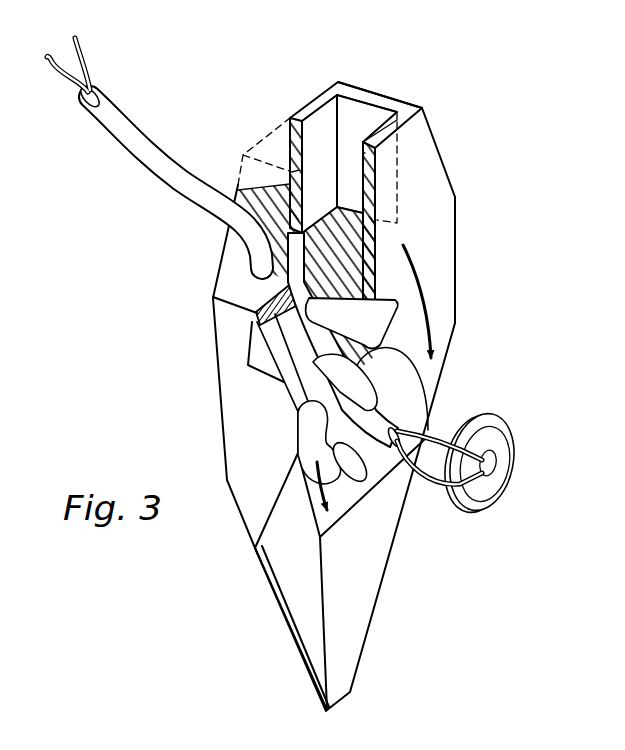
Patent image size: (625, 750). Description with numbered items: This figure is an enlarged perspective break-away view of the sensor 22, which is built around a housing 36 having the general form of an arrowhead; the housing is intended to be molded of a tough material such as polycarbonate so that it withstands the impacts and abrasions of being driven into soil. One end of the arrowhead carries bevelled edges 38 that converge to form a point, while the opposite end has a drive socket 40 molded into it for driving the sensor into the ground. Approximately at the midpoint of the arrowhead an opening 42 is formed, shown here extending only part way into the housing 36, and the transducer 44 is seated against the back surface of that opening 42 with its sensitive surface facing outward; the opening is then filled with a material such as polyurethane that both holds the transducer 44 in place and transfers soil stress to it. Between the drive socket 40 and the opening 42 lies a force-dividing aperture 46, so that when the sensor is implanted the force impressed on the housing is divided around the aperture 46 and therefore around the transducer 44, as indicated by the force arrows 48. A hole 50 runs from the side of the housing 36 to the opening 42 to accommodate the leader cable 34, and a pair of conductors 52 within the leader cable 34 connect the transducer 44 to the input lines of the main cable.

The sensor 22 is at (468, 150).
The leader cable 34 is at (160, 142).
The housing 36 is at (455, 243).
The bevelled edges 38 is at (290, 585).
The drive socket 40 is at (363, 112).
The opening 42 is at (310, 428).
The transducer 44 is at (468, 508).
The force-dividing aperture 46 is at (400, 303).
The force arrows 48 is at (422, 284).
The hole 50 is at (218, 274).
The conductors 52 is at (73, 33).